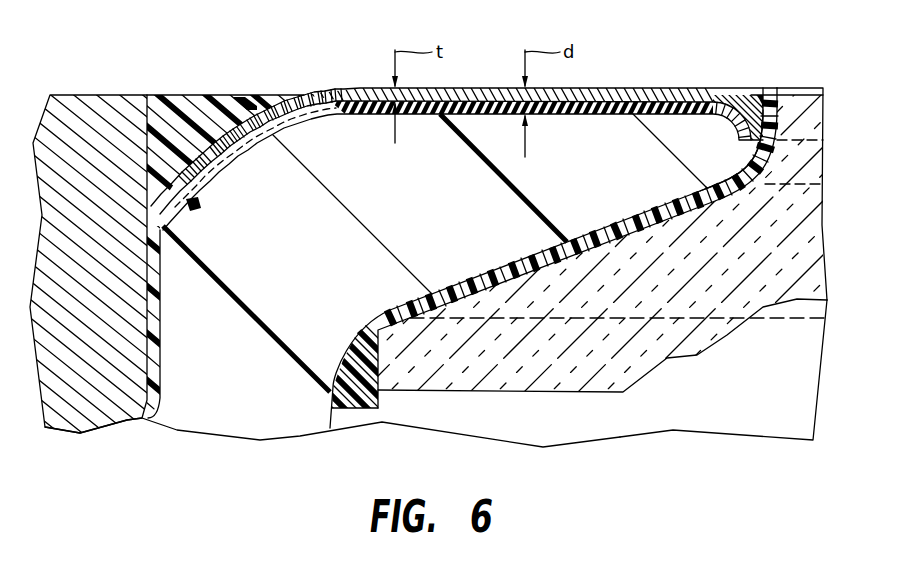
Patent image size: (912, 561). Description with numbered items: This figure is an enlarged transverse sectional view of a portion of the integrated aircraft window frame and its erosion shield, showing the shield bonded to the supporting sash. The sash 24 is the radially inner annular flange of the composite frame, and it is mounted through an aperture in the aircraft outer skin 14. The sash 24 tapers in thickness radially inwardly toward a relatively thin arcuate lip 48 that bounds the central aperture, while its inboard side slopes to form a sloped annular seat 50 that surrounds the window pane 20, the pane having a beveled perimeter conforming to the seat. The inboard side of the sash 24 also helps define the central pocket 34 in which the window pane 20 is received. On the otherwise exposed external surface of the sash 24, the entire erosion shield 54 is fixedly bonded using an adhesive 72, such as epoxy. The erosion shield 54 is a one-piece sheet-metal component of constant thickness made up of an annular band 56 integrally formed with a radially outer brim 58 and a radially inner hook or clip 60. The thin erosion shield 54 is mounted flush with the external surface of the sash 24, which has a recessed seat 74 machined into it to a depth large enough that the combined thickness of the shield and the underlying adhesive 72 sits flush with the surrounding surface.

The outer skin 14 is at (103, 274).
The window pane 20 is at (660, 287).
The sash 24 is at (417, 230).
The central pocket 34 is at (760, 379).
The arcuate lip 48 is at (769, 176).
The sloped annular seat 50 is at (494, 286).
The erosion shield 54 is at (464, 124).
The annular band 56 is at (478, 88).
The brim 58 is at (205, 143).
The clip 60 is at (778, 122).
The adhesive 72 is at (348, 113).
The recessed seat 74 is at (270, 133).